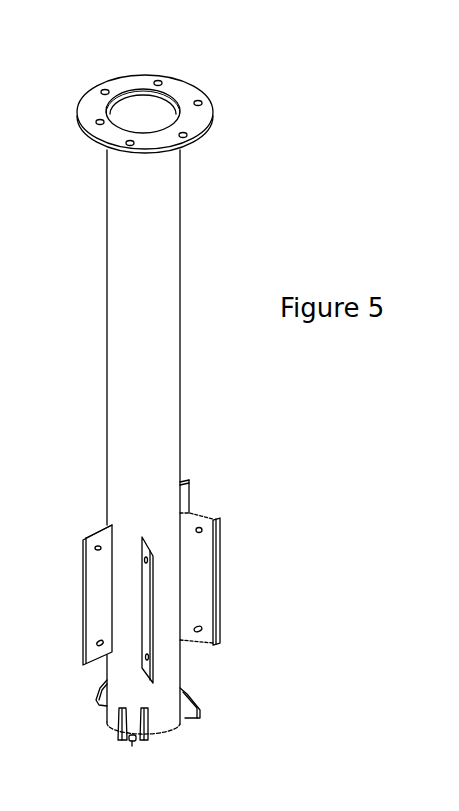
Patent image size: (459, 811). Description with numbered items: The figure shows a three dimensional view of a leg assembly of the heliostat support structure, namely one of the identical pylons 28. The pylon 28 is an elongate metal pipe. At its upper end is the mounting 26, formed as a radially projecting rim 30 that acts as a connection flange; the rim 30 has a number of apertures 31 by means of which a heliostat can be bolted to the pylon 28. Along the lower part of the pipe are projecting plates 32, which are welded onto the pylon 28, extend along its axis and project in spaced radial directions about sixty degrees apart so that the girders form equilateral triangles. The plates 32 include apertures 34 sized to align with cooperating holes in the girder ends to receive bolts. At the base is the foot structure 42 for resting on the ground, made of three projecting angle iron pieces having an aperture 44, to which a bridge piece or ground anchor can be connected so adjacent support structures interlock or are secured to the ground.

The mounting 26 is at (258, 95).
The pylon 28 is at (157, 235).
The radially projecting rim 30 is at (119, 83).
The apertures 31 is at (157, 83).
The projecting plates 32 is at (190, 480).
The apertures 34 is at (200, 528).
The foot structure 42 is at (120, 735).
The aperture 44 is at (134, 742).